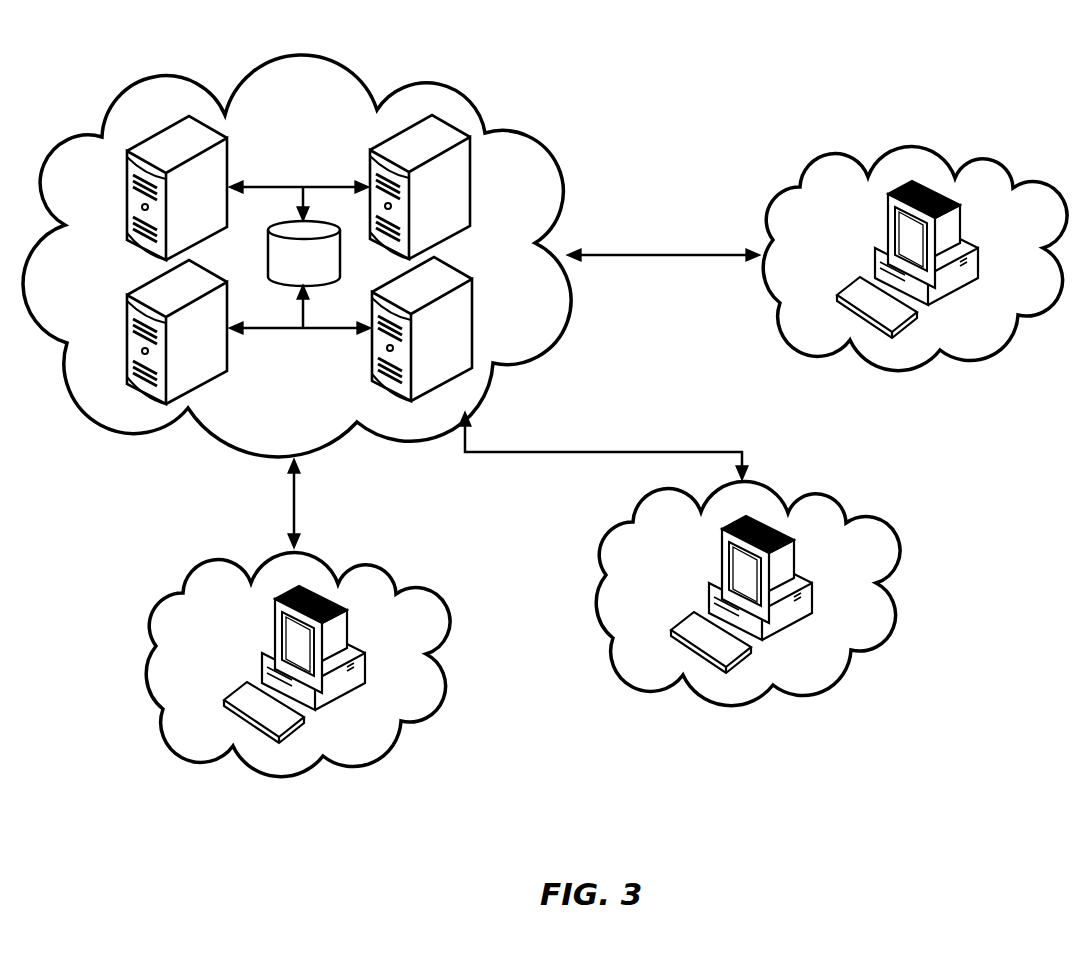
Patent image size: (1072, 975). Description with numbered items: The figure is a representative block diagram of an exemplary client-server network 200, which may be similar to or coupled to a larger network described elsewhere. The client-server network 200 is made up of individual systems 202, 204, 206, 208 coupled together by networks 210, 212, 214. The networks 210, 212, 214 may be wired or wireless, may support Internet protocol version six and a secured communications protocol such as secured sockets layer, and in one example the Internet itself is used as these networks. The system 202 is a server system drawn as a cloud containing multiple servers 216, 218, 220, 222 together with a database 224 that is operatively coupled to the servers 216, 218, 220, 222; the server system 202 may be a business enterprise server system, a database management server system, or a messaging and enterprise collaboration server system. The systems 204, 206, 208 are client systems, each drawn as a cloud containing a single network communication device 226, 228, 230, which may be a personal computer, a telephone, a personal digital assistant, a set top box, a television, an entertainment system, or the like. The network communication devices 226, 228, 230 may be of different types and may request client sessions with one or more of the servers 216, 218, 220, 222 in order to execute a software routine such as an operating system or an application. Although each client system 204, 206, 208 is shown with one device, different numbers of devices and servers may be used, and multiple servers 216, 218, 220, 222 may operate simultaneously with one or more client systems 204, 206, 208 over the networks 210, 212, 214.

The client-server network 200 is at (634, 34).
The server system 202 is at (468, 97).
The client system 204 is at (1005, 170).
The client system 206 is at (835, 502).
The client system 208 is at (390, 572).
The network 210 is at (668, 249).
The network 212 is at (605, 449).
The network 214 is at (297, 515).
The server 216 is at (228, 146).
The server 218 is at (469, 187).
The server 220 is at (473, 329).
The server 222 is at (210, 268).
The database 224 is at (302, 272).
The network communication device 226 is at (977, 248).
The network communication device 228 is at (810, 587).
The network communication device 230 is at (362, 658).